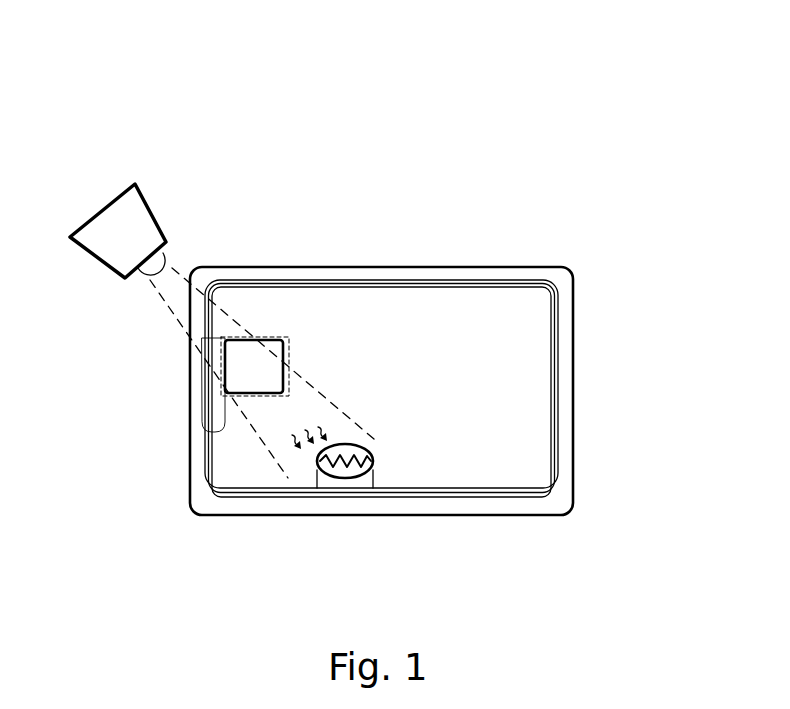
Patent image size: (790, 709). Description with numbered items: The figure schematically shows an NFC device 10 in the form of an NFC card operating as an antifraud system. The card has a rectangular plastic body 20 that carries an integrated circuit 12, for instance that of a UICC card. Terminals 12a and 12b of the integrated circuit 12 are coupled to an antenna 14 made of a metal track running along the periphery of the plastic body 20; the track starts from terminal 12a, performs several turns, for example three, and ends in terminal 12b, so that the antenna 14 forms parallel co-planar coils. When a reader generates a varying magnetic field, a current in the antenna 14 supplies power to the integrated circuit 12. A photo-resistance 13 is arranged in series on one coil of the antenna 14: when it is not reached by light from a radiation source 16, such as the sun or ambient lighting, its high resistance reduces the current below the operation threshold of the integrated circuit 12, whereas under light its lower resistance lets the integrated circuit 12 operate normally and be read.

The NFC device 10 is at (386, 176).
The integrated circuit 12 is at (287, 348).
The terminal 12a is at (290, 394).
The terminal 12b is at (207, 432).
The photo-resistance 13 is at (332, 480).
The antenna 14 is at (503, 280).
The radiation source 16 is at (93, 216).
The plastic body 20 is at (567, 338).